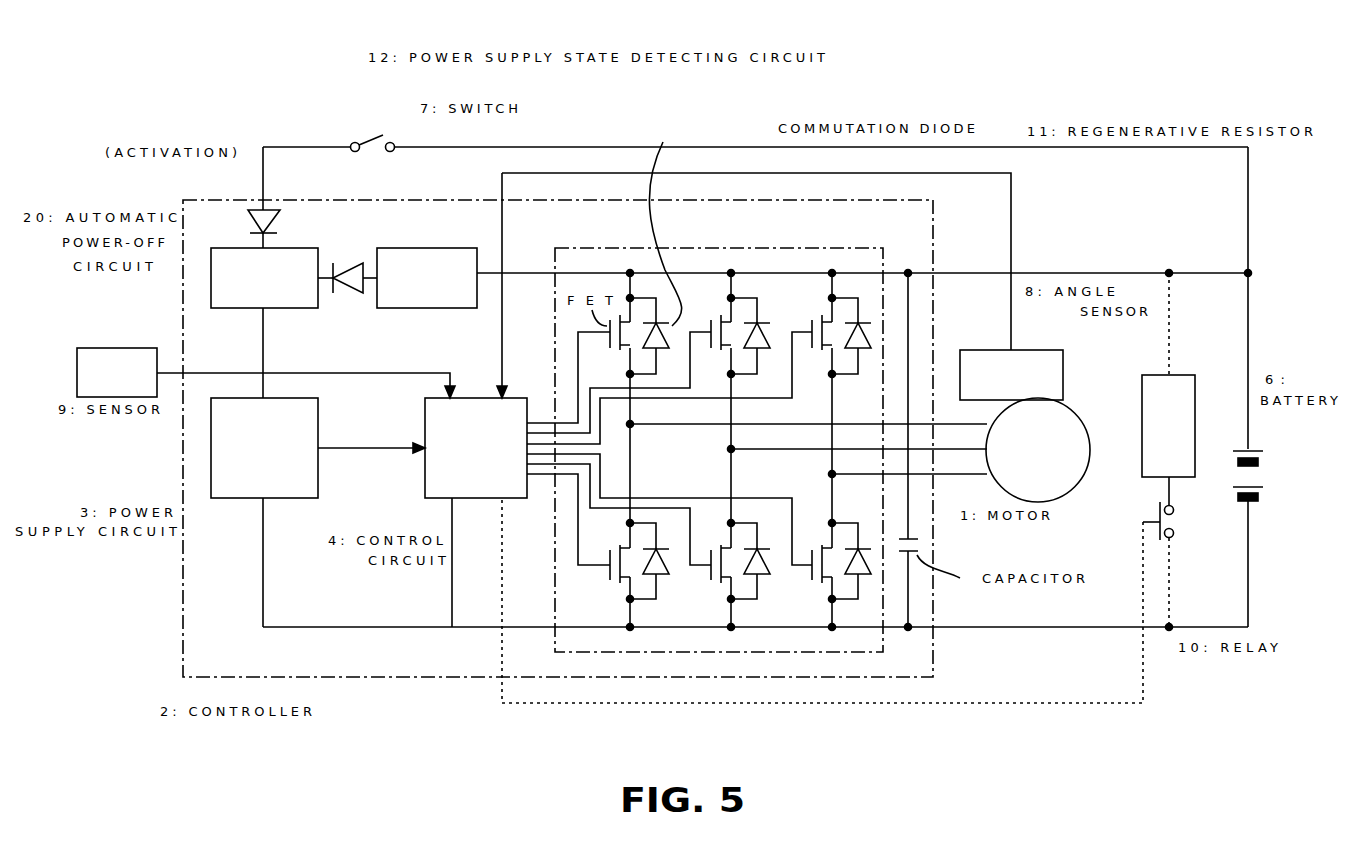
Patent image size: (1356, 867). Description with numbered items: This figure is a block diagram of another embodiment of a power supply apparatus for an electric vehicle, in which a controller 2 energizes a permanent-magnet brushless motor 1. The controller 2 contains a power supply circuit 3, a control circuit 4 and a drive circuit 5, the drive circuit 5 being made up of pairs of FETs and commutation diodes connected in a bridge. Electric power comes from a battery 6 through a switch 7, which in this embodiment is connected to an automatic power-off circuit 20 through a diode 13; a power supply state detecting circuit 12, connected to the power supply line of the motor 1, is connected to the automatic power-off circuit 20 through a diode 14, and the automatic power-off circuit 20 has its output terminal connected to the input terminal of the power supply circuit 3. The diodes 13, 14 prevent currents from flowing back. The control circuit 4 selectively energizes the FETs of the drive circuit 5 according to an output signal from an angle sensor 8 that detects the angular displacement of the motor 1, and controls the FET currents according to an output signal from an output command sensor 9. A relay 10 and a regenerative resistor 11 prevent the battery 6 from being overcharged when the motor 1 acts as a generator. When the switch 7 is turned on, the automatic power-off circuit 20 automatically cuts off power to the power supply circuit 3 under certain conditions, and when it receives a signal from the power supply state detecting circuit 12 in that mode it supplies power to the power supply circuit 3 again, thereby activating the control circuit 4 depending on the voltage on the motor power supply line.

The permanent-magnet brushless motor 1 is at (1065, 497).
The controller 2 is at (358, 678).
The power supply circuit 3 is at (288, 498).
The control circuit 4 is at (478, 498).
The drive circuit 5 is at (817, 652).
The battery 6 is at (1265, 470).
The switch 7 is at (370, 143).
The angle sensor 8 is at (1045, 350).
The output command sensor 9 is at (112, 348).
The relay 10 is at (1175, 527).
The regenerative resistor 11 is at (1175, 375).
The power supply state detecting circuit 12 is at (420, 308).
The diode 13 is at (255, 233).
The diode 14 is at (349, 268).
The automatic power-off circuit 20 is at (290, 308).